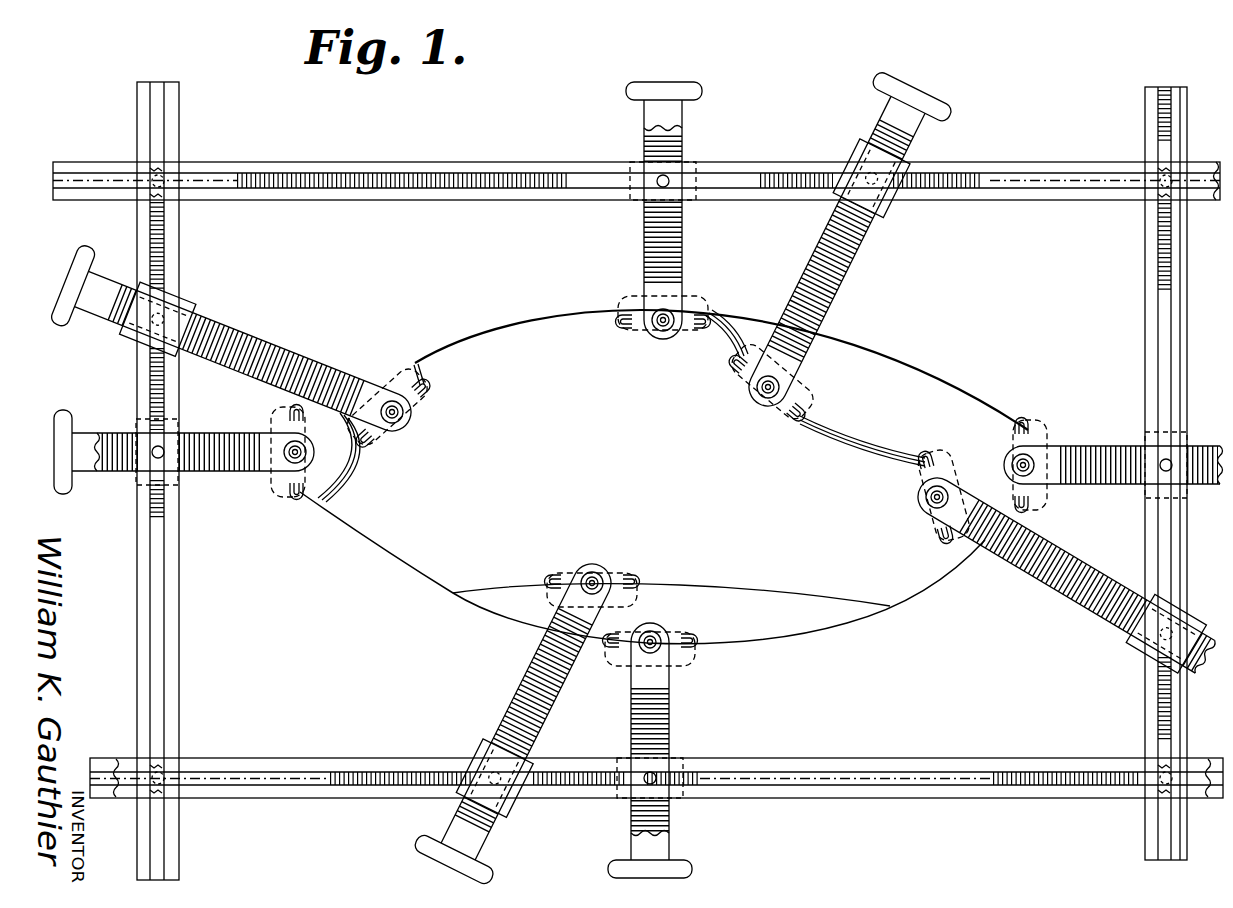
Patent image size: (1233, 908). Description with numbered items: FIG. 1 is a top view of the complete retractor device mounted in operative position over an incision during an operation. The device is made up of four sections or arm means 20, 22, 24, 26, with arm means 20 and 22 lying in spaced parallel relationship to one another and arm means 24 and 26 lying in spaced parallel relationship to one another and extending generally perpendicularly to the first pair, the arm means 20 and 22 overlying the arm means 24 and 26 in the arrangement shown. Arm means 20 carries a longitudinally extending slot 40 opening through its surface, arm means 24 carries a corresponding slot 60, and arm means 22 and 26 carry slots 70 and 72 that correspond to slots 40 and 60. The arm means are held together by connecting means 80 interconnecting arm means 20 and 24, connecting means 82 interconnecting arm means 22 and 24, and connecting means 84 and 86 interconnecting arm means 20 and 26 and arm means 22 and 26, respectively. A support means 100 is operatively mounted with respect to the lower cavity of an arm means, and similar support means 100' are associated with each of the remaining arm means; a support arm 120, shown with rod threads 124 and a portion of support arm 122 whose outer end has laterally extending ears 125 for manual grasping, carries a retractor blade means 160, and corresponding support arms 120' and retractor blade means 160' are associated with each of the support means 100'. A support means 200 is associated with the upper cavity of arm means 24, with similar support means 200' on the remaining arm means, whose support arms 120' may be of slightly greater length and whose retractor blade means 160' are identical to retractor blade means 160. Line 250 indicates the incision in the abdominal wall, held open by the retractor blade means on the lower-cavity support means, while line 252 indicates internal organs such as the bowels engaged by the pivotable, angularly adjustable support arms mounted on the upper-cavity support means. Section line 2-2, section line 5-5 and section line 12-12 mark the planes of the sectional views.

The section line 2- 2 is at (645, 62).
The section line 5- 5 is at (18, 308).
The section line 12- 12 is at (40, 210).
The arm means 20 is at (636, 164).
The arm means 22 is at (656, 801).
The arm means 24 is at (198, 481).
The arm means 26 is at (1127, 473).
The slot 40 is at (383, 187).
The slot 60 is at (179, 572).
The slot 70 is at (798, 799).
The slot 72 is at (1158, 716).
The connecting means 80 is at (182, 200).
The connecting means 82 is at (166, 765).
The connecting means 84 is at (1160, 186).
The connecting means 86 is at (1160, 792).
The support means 100 is at (624, 195).
The support means 100' is at (684, 588).
The support arm 120 is at (685, 199).
The support arm 120' is at (635, 564).
The portion of support arm 122 is at (645, 115).
The rod threads 124 is at (645, 220).
The ears 125 is at (680, 86).
The retractor blade means 160 is at (644, 332).
The retractor blade means 160' is at (686, 502).
The support means 200 is at (188, 307).
The support means 200' is at (831, 496).
The line 250 is at (405, 566).
The line 252 is at (340, 480).